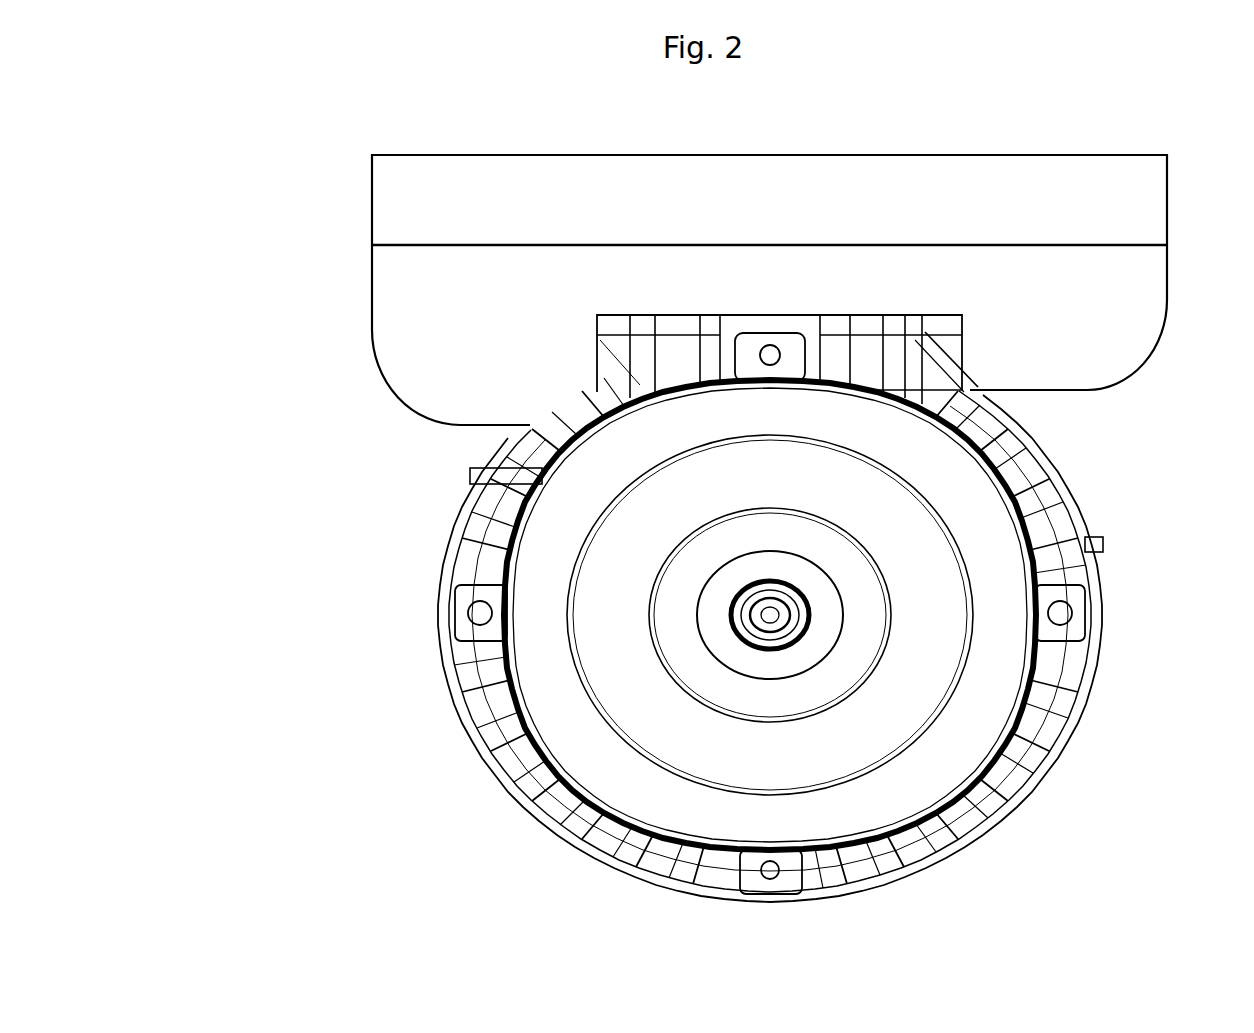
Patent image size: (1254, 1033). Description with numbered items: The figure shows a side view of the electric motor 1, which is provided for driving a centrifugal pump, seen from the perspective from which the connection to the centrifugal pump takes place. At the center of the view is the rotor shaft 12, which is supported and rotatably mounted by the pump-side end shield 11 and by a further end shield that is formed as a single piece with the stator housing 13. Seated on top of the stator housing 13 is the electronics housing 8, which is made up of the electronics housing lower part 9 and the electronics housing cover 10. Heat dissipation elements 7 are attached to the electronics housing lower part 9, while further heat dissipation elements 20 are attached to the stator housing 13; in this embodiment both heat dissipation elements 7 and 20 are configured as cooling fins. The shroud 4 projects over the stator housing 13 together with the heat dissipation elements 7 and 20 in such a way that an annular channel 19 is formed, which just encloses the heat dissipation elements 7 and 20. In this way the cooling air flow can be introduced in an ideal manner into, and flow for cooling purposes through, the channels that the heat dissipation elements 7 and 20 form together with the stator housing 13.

The electric motor 1 is at (437, 788).
The shroud 4 is at (1050, 455).
The heat dissipation elements 7 is at (920, 395).
The electronics housing 8 is at (322, 241).
The electronics housing lower part 9 is at (400, 300).
The electronics housing cover 10 is at (395, 184).
The pump-side end shield 11 is at (990, 702).
The rotor shaft 12 is at (812, 653).
The stator housing 13 is at (502, 682).
The annular channel 19 is at (485, 538).
The heat dissipation elements 20 is at (922, 870).